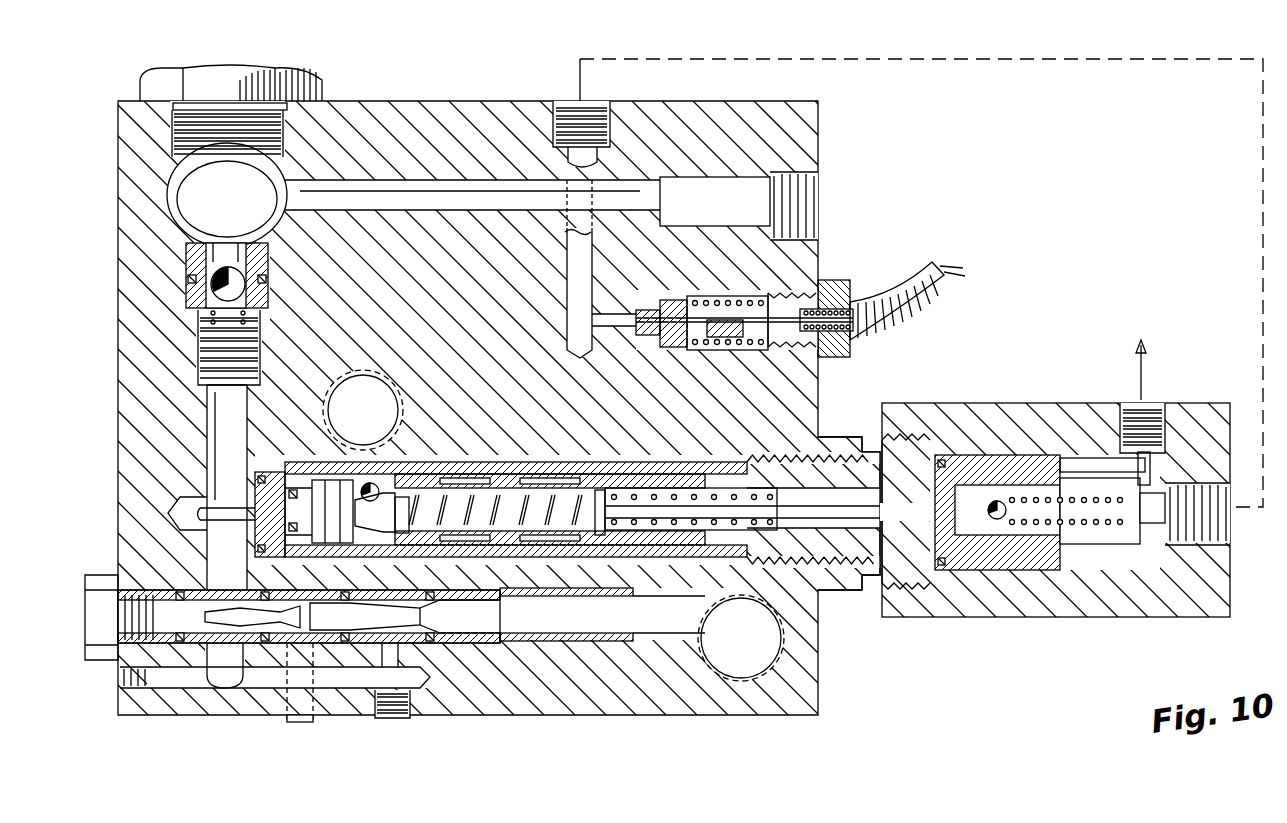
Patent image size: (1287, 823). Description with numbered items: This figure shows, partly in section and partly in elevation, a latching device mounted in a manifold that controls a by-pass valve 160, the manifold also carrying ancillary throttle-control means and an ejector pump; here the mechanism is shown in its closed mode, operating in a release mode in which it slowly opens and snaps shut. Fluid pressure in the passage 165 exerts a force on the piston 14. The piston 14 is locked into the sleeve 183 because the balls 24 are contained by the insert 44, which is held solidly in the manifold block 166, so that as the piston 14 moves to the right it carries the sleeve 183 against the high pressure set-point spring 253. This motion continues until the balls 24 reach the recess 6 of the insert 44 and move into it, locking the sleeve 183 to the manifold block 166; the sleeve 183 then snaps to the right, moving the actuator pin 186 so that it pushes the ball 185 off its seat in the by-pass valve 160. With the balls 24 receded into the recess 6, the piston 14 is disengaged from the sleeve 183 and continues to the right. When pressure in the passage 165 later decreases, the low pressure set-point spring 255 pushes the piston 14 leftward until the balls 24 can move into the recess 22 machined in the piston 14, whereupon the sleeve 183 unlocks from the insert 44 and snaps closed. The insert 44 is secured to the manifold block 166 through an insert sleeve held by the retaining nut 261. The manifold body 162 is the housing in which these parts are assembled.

The valve body 162 is at (487, 327).
The passage 165 is at (217, 418).
The insert 44 is at (316, 463).
The balls 24 is at (374, 484).
The recess 6 is at (402, 472).
The sleeve 183 is at (467, 462).
The low pressure set-point spring 255 is at (527, 482).
The high pressure set-point spring 253 is at (661, 494).
The manifold block 166 is at (820, 393).
The ball 185 is at (1003, 500).
The piston 14 is at (342, 518).
The recess 22 is at (373, 528).
The actuator pin 186 is at (812, 520).
The retaining nut 261 is at (852, 584).
The by-pass valve 160 is at (643, 408).